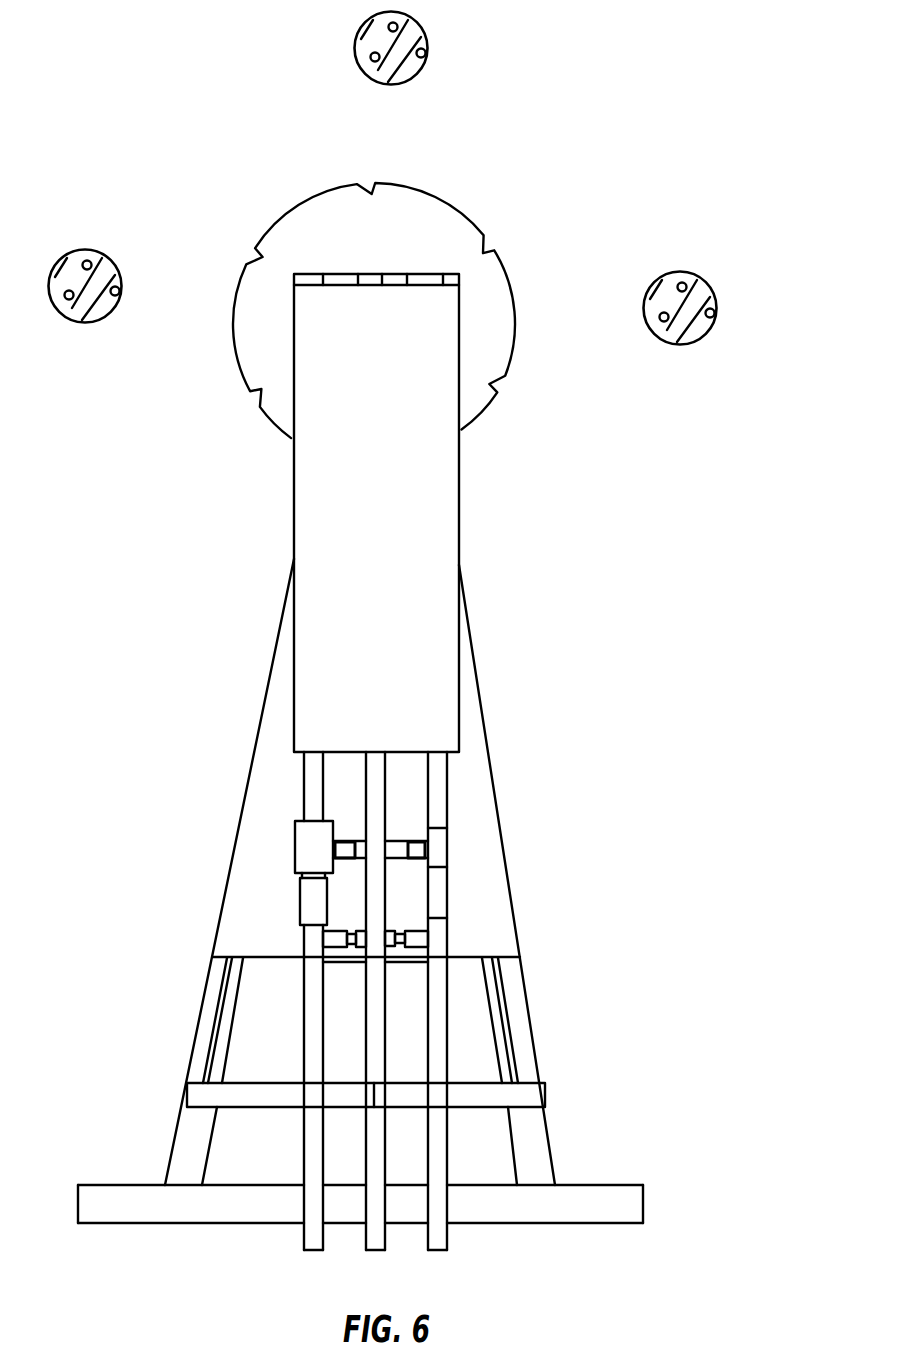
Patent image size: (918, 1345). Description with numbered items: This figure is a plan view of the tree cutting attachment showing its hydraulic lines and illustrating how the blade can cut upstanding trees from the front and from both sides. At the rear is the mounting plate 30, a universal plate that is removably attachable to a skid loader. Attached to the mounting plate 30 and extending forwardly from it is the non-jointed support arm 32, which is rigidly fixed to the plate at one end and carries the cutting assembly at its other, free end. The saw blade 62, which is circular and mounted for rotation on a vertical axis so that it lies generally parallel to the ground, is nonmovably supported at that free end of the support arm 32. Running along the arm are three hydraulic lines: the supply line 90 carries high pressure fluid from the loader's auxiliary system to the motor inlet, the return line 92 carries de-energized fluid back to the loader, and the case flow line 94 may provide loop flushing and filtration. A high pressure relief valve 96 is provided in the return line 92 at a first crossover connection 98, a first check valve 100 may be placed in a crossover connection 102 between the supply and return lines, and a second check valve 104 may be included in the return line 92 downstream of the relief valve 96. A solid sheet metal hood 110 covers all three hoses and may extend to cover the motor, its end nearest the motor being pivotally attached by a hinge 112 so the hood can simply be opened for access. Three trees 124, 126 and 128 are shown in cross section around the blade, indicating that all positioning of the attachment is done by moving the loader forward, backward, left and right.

The mounting plate 30 is at (615, 1185).
The support arm 32 is at (247, 777).
The saw blade 62 is at (428, 193).
The supply line 90 is at (448, 992).
The return line 92 is at (312, 946).
The case flow line 94 is at (377, 810).
The high pressure relief valve 96 is at (305, 862).
The first crossover connection 98 is at (408, 840).
The first check valve 100 is at (392, 925).
The crossover connection 102 is at (402, 927).
The second check valve 104 is at (310, 912).
The hood 110 is at (438, 527).
The hinge 112 is at (343, 274).
The tree 124 is at (122, 278).
The tree 126 is at (428, 35).
The tree 128 is at (718, 305).